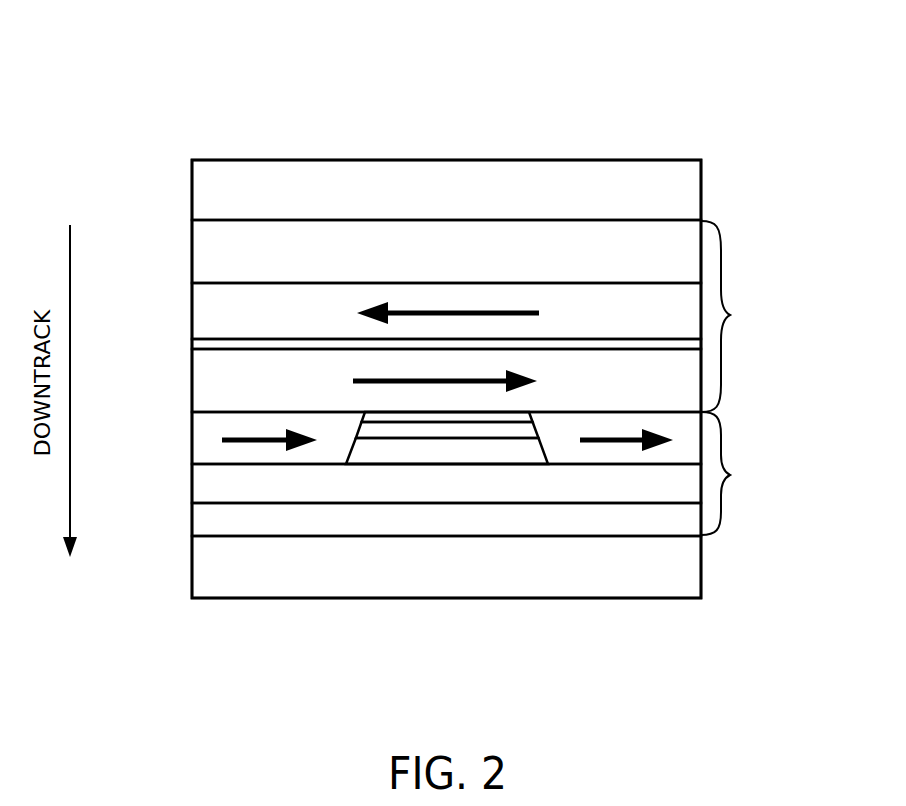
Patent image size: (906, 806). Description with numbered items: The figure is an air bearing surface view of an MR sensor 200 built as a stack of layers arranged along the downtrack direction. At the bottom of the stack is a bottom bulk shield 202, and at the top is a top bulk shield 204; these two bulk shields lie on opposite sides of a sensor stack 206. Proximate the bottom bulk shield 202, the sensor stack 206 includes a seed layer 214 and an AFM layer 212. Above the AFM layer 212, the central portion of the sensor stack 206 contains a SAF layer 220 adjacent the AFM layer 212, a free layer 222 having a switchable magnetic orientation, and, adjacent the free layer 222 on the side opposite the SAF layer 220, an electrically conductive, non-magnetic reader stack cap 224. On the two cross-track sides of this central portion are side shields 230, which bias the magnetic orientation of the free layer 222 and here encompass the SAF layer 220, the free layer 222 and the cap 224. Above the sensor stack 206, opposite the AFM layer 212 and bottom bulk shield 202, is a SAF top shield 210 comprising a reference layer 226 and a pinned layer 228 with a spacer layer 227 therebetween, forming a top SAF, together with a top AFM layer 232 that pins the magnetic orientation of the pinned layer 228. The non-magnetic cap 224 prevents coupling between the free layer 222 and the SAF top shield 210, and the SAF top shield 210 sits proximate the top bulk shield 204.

The MR sensor 200 is at (201, 74).
The bottom bulk shield 202 is at (701, 568).
The top bulk shield 204 is at (192, 191).
The sensor stack 206 is at (737, 473).
The SAF top shield 210 is at (737, 316).
The AFM layer 212 is at (192, 487).
The seed layer 214 is at (192, 527).
The SAF layer 220 is at (372, 458).
The free layer 222 is at (438, 441).
The reader stack cap 224 is at (509, 425).
The reference layer 226 is at (192, 387).
The spacer layer 227 is at (192, 343).
The pinned layer 228 is at (192, 310).
The side shields 230 is at (192, 439).
The AFM layer 232 is at (192, 254).